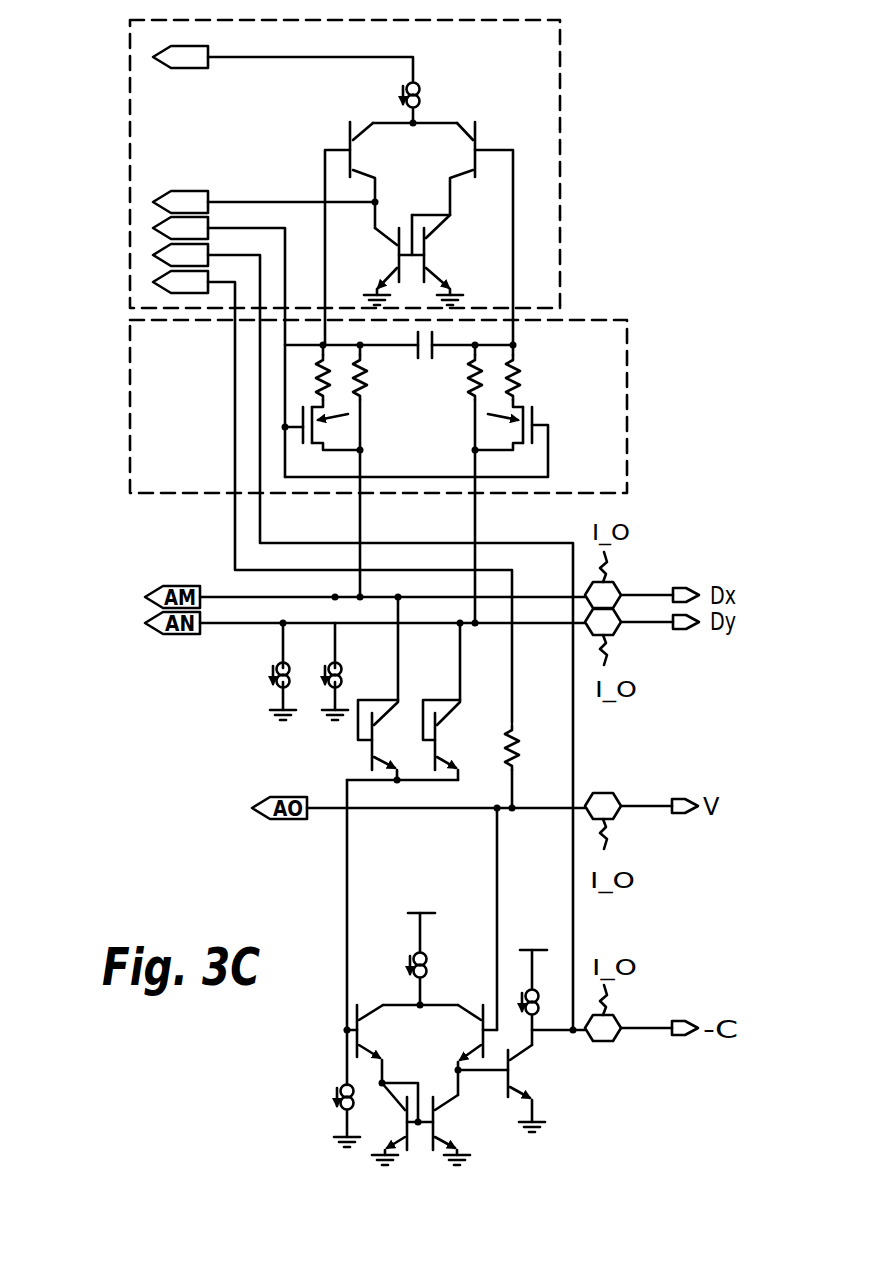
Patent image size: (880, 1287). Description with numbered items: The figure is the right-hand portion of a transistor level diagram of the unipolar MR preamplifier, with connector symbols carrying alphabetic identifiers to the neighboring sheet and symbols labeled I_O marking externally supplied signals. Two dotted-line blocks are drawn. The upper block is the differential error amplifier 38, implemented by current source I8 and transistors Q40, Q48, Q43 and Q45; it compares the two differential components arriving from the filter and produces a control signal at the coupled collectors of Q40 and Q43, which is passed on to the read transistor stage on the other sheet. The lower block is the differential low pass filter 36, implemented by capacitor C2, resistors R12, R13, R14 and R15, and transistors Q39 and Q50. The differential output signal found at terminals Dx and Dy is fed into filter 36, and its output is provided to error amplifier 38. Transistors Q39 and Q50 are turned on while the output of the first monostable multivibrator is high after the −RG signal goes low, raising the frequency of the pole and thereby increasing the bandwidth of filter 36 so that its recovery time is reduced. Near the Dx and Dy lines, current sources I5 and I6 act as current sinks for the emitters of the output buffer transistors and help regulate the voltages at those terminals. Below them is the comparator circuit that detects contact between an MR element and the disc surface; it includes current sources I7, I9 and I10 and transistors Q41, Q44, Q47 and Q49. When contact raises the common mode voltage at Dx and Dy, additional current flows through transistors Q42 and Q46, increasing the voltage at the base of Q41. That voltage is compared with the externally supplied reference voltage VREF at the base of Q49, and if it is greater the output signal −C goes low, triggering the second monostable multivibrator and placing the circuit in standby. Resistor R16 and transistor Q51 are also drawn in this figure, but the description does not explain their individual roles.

The differential error amplifier 38 is at (128, 152).
The differential low pass filter 36 is at (128, 428).
The current source I8 is at (393, 82).
The transistor Q40 is at (367, 233).
The transistor Q48 is at (470, 233).
The transistor Q43 is at (376, 266).
The transistor Q45 is at (450, 260).
The capacitor C2 is at (423, 329).
The resistor R12 is at (309, 365).
The resistor R13 is at (378, 372).
The resistor R14 is at (459, 372).
The resistor R15 is at (545, 367).
The transistor Q39 is at (346, 427).
The transistor Q50 is at (416, 438).
The resistor R16 is at (532, 745).
The current source I5 is at (273, 671).
The current source I6 is at (326, 671).
The transistor Q42 is at (390, 688).
The transistor Q46 is at (455, 701).
The current source I9 is at (427, 944).
The transistor Q41 is at (379, 1044).
The transistor Q49 is at (460, 1050).
The current source I7 is at (325, 1116).
The transistor Q44 is at (400, 1125).
The transistor Q47 is at (468, 1130).
The current source I10 is at (540, 984).
The transistor Q51 is at (512, 1088).